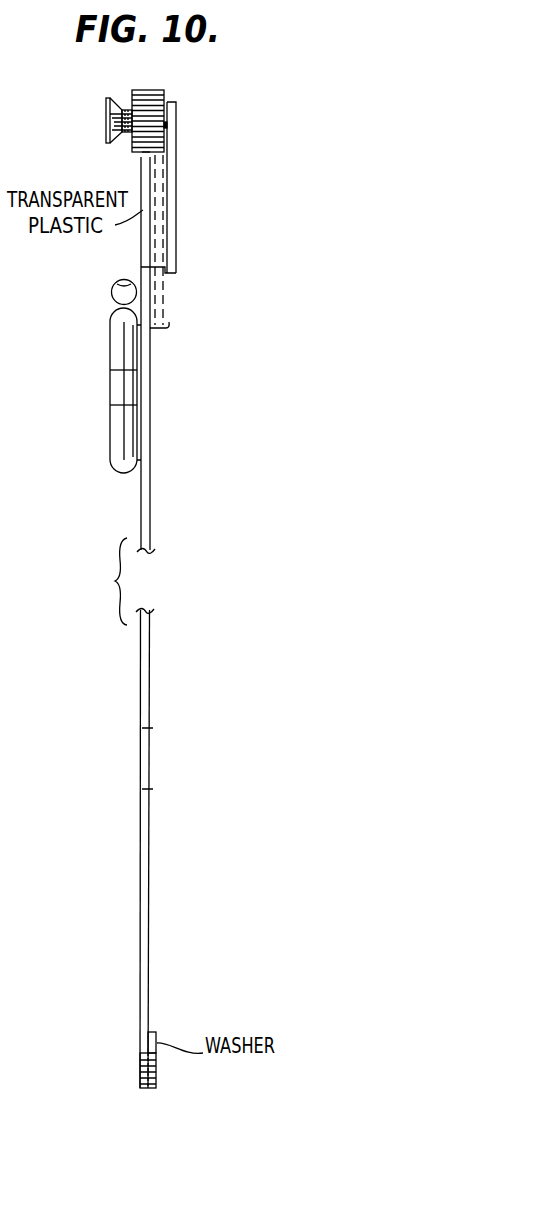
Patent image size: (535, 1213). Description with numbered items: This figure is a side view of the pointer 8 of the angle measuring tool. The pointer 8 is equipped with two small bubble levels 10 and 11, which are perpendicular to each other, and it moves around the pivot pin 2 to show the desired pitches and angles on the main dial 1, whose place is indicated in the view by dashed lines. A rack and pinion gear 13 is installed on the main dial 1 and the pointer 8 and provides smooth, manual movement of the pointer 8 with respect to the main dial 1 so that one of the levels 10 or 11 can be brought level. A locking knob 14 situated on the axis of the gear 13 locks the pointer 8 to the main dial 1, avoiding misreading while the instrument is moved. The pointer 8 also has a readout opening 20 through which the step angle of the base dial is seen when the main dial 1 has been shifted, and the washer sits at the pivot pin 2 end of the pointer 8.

The main dial 1 is at (181, 190).
The pivot pin 2 is at (140, 1060).
The pointer 8 is at (155, 532).
The level 10 is at (112, 292).
The level 11 is at (110, 393).
The rack and pinion gear 13 is at (163, 100).
The locking knob 14 is at (110, 132).
The readout opening 20 is at (152, 769).